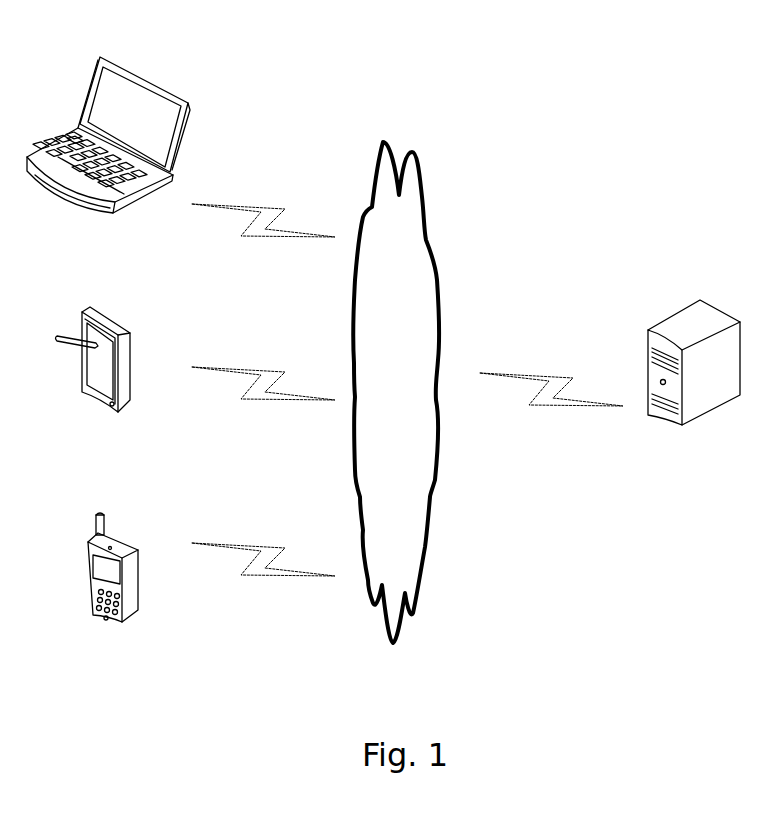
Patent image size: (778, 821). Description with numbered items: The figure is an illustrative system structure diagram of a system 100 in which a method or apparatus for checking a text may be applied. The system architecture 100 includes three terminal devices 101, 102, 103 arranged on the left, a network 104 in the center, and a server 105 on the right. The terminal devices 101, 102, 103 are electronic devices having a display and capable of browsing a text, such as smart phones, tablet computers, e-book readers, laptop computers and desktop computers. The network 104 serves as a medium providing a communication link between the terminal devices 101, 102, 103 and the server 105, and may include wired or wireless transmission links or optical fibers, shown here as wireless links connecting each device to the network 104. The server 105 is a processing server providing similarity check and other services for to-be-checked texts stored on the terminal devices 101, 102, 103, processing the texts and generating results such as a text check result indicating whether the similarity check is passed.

The system 100 is at (651, 49).
The terminal device 101 is at (113, 585).
The terminal device 102 is at (93, 381).
The terminal device 103 is at (108, 156).
The network 104 is at (396, 392).
The server 105 is at (694, 386).